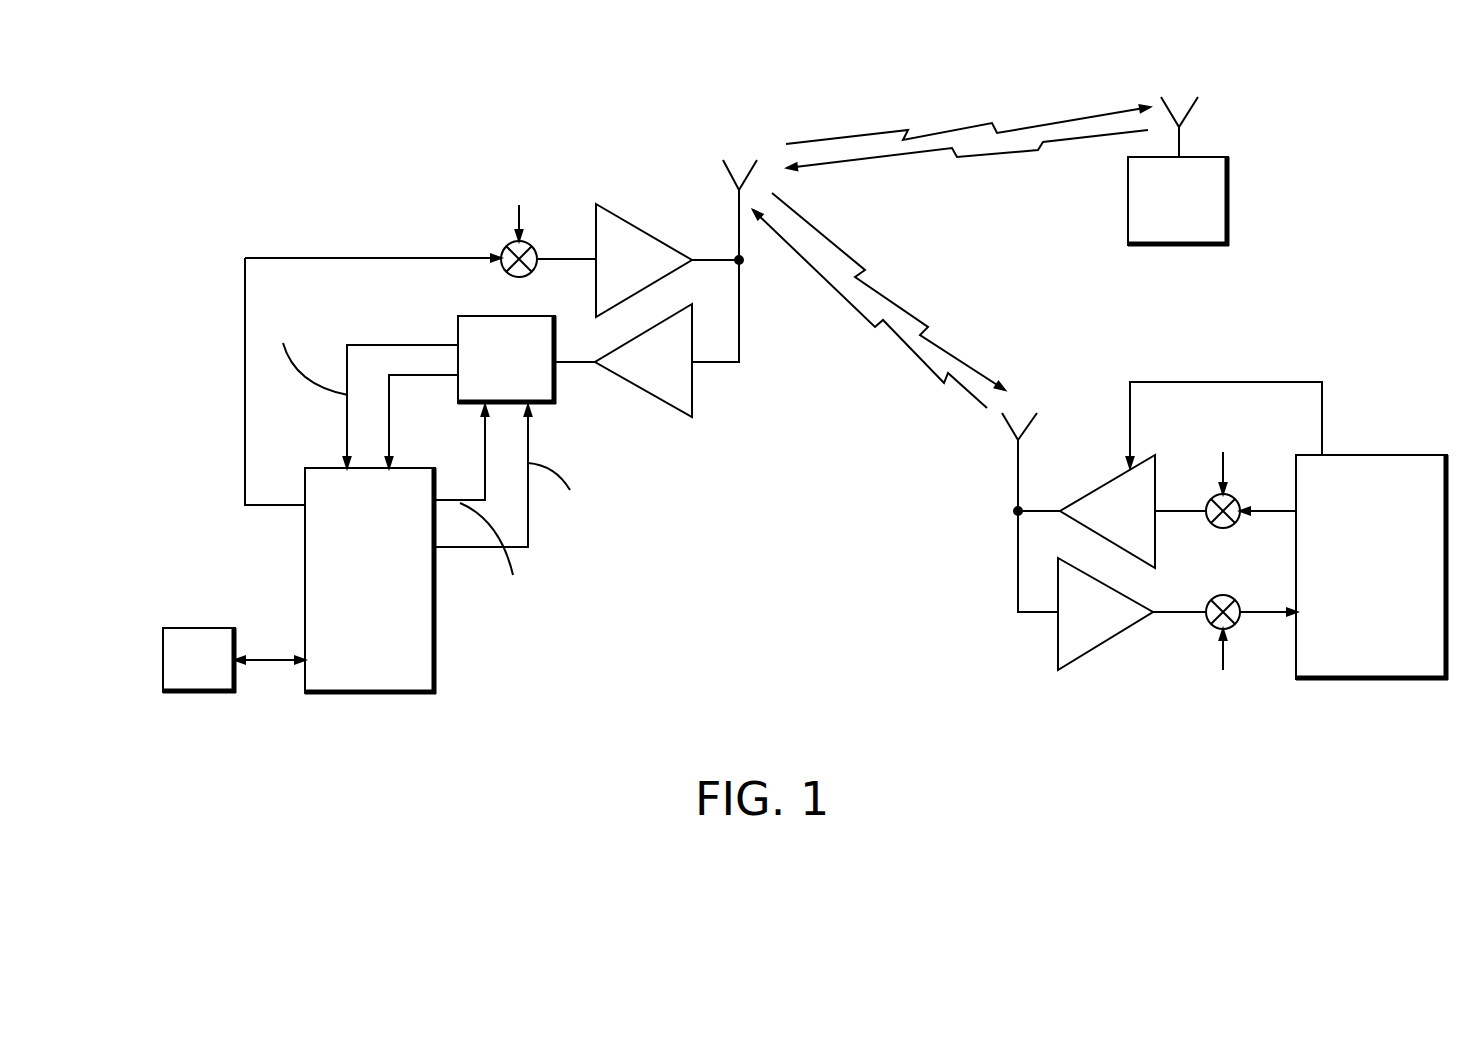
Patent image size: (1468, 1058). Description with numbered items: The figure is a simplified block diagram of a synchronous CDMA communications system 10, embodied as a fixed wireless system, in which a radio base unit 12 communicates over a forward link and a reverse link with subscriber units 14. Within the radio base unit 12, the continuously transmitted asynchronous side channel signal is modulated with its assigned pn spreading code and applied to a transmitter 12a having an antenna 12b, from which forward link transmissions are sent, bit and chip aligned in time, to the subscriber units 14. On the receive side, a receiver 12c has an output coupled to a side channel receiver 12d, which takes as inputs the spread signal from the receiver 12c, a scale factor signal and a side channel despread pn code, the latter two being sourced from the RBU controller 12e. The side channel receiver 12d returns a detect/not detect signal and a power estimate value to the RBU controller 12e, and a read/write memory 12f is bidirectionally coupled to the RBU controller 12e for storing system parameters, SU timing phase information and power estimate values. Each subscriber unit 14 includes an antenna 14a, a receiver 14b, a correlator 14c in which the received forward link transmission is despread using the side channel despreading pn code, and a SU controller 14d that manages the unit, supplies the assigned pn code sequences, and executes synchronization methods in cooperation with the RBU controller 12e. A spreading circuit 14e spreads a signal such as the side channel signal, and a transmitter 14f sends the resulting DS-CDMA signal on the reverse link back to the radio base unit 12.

The synchronous CDMA communications system 10 is at (773, 610).
The radio base unit 12 is at (460, 441).
The transmitter 12a is at (622, 213).
The antenna 12b is at (740, 210).
The receiver 12c is at (692, 385).
The side channel receiver 12d is at (555, 390).
The RBU controller 12e is at (380, 693).
The read/write memory 12f is at (199, 692).
The subscriber unit 14 is at (1228, 205).
The antenna 14a is at (987, 433).
The receiver 14b is at (1058, 648).
The correlator 14c is at (1210, 628).
The SU controller 14d is at (1412, 680).
The spreading circuit 14e is at (1208, 522).
The transmitter 14f is at (1107, 478).